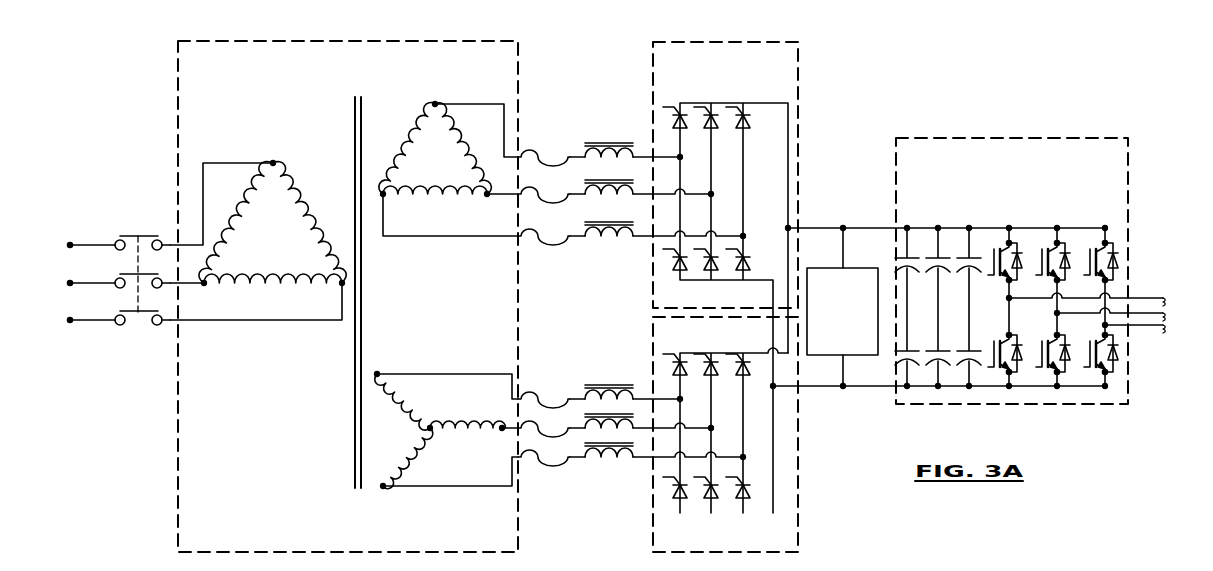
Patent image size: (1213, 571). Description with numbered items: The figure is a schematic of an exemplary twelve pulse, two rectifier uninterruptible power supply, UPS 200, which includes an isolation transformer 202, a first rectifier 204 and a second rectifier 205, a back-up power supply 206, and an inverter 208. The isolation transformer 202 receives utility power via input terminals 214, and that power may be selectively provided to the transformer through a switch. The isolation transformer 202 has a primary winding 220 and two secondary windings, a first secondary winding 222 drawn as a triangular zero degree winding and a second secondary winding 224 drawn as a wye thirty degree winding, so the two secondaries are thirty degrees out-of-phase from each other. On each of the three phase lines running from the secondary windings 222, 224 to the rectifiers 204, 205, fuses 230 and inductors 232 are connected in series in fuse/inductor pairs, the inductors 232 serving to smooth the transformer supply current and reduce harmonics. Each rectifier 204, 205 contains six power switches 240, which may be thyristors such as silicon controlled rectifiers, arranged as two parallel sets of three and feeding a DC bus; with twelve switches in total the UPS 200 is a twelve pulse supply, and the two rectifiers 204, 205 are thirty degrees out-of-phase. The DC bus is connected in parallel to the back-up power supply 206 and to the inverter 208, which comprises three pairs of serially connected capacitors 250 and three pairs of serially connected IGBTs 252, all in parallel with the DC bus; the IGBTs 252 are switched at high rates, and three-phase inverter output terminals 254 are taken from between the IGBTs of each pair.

The twelve pulse UPS 200 is at (158, 46).
The isolation transformer 202 is at (520, 64).
The first rectifier 204 is at (798, 80).
The second rectifier 205 is at (798, 490).
The back-up power supply 206 is at (843, 355).
The inverter 208 is at (998, 138).
The input terminals 214 is at (70, 243).
The primary winding 220 is at (248, 187).
The first secondary winding 222 is at (428, 106).
The second secondary winding 224 is at (432, 422).
The fuses 230 is at (558, 165).
The inductors 232 is at (612, 142).
The power switches 240 is at (678, 108).
The capacitors 250 is at (969, 255).
The insulated gate bipolar transistors 252 is at (1013, 240).
The three-phase inverter output terminals 254 is at (1103, 326).